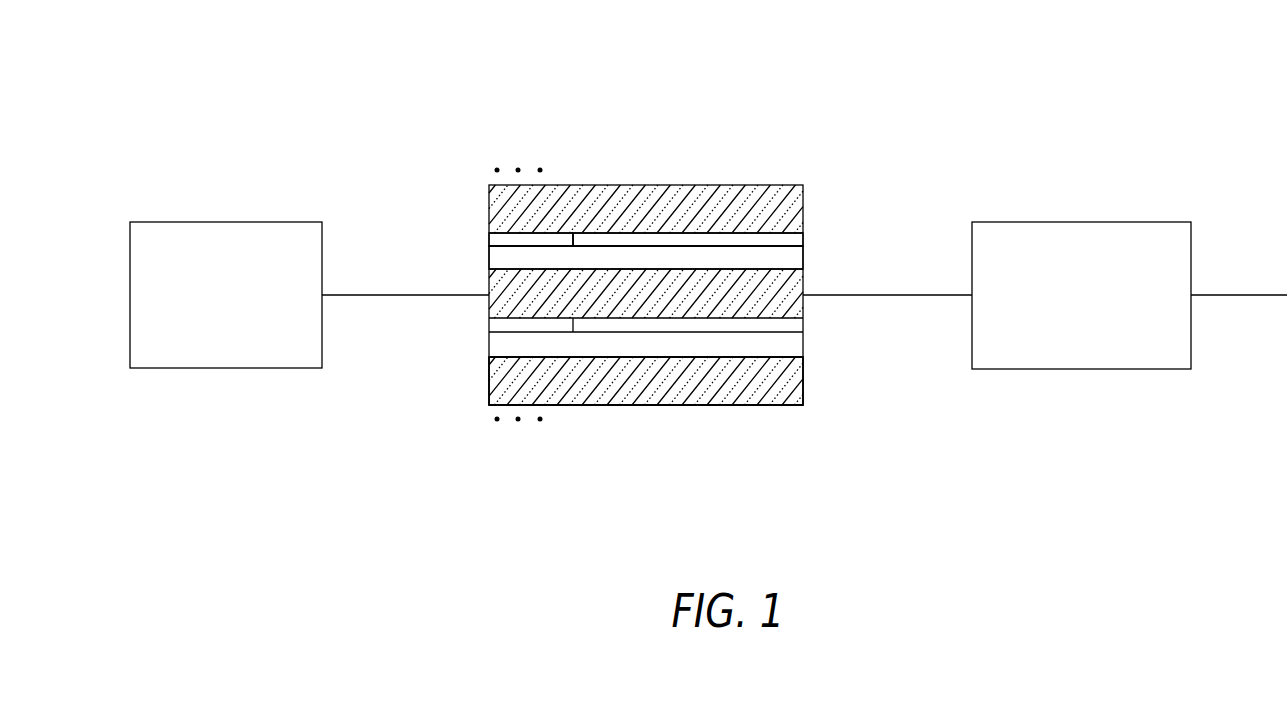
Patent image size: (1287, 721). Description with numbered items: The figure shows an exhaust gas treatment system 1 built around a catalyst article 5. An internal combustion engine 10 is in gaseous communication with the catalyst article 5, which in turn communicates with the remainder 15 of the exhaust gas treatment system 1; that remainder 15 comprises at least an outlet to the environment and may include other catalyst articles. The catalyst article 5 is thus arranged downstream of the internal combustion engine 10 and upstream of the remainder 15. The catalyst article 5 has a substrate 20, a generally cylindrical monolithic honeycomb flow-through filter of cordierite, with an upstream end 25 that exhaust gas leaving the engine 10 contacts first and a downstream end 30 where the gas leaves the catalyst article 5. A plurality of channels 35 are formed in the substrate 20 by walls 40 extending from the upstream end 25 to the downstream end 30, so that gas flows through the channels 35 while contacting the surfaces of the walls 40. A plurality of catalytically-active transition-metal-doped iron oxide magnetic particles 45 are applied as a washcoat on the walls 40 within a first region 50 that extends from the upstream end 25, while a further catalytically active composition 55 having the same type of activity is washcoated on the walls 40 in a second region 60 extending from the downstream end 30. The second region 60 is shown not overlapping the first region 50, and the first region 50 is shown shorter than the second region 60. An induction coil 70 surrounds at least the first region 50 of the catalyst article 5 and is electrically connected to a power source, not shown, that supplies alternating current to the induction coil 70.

The exhaust gas treatment system 1 is at (461, 60).
The catalyst article 5 is at (650, 340).
The internal combustion engine 10 is at (186, 222).
The remainder of the exhaust gas treatment system 15 is at (1028, 222).
The substrate 20 is at (752, 405).
The upstream end 25 is at (490, 378).
The downstream end 30 is at (803, 380).
The channels 35 is at (490, 258).
The walls 40 is at (790, 213).
The catalytically-active transition-metal-doped iron oxide magnetic particles 45 is at (490, 240).
The first region 50 is at (567, 183).
The further catalytically active composition 55 is at (790, 238).
The second region 60 is at (740, 183).
The induction coil 70 is at (497, 423).